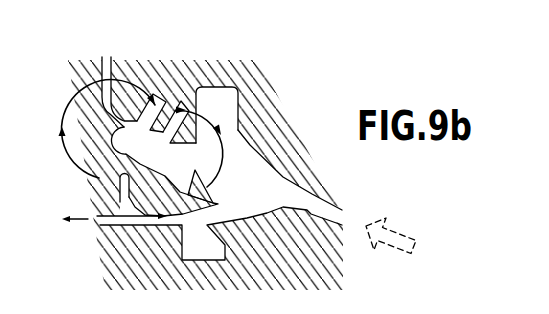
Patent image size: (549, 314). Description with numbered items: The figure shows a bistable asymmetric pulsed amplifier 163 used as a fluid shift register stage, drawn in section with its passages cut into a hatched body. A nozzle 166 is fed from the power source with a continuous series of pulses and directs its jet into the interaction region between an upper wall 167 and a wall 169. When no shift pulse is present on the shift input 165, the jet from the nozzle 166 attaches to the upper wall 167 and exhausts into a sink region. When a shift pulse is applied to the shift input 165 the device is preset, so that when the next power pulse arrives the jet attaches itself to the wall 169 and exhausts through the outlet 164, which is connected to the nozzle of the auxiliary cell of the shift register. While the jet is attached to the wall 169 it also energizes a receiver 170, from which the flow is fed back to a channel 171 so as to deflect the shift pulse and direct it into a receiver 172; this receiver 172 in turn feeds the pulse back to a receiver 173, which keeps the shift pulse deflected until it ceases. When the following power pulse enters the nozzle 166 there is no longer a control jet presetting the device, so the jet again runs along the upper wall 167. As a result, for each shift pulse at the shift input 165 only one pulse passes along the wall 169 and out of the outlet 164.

The bistable asymmetric pulsed amplifier 163 is at (319, 101).
The outlet 164 is at (99, 226).
The shift input 165 is at (108, 22).
The nozzle 166 is at (310, 209).
The upper wall 167 is at (306, 196).
The wall 169 is at (258, 212).
The receiver 170 is at (120, 186).
The channel 171 is at (155, 97).
The receiver 172 is at (189, 195).
The receiver 173 is at (182, 104).